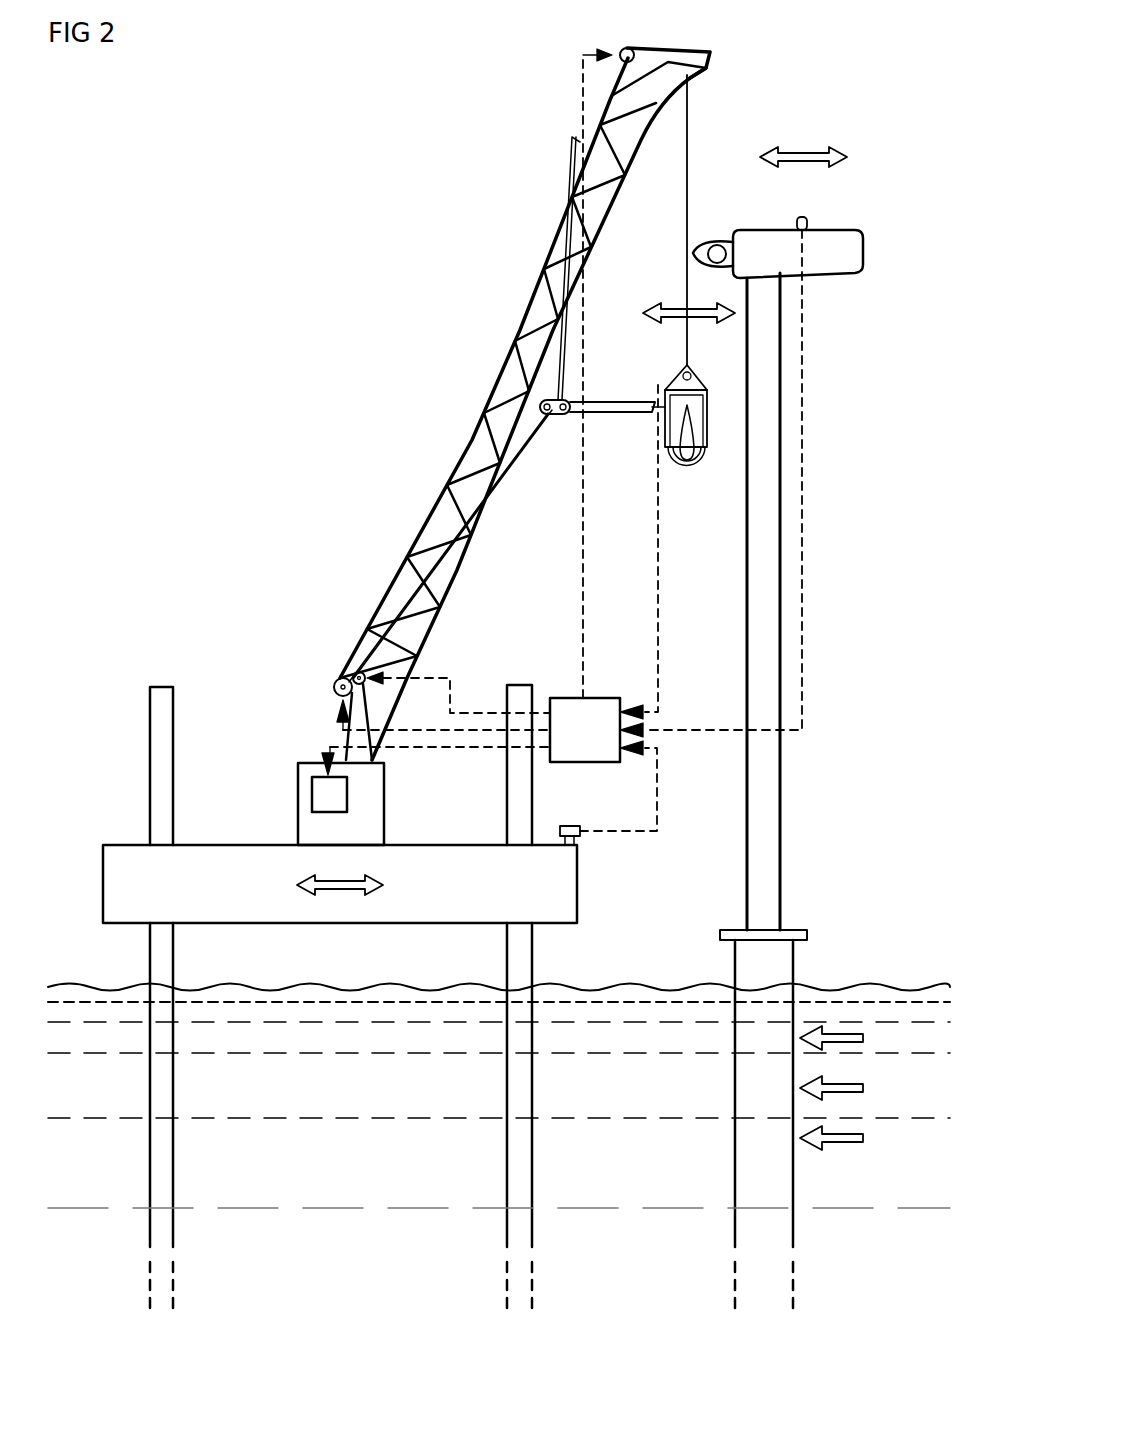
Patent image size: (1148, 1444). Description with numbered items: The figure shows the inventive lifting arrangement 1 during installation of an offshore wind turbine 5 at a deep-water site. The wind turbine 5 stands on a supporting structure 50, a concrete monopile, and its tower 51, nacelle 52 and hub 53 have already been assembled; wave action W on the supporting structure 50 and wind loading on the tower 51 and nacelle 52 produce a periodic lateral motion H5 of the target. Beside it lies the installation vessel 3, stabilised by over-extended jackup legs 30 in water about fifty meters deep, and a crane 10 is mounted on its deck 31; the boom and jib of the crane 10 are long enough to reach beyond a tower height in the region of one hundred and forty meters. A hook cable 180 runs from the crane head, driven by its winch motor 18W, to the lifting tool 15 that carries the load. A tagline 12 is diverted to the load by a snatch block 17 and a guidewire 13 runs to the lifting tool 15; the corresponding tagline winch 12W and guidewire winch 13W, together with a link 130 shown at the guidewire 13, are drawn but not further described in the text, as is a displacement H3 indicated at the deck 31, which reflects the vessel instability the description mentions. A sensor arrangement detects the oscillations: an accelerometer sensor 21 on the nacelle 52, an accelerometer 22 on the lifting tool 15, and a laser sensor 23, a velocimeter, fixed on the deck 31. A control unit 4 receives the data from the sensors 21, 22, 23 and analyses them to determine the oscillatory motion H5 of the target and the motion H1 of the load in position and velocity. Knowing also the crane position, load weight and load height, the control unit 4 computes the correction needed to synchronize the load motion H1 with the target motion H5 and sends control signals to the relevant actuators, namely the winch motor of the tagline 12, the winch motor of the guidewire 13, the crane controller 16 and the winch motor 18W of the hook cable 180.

The lifting arrangement 1 is at (400, 325).
The installation vessel 3 is at (100, 755).
The control unit 4 is at (585, 698).
The offshore wind turbine 5 is at (828, 362).
The crane 10 is at (452, 457).
The tagline 12 is at (573, 287).
The hoist winch 12W is at (352, 672).
The guidewire 13 is at (565, 252).
The tagline winch 13W is at (333, 686).
The lifting tool 15 is at (705, 382).
The crane controller 16 is at (312, 800).
The snatch block 17 is at (565, 418).
The winch motor of the hook cable 18W is at (619, 50).
The accelerometer sensor 21 is at (808, 222).
The accelerometer 22 is at (672, 385).
The laser sensor 23 is at (575, 830).
The jackup legs 30 is at (152, 1085).
The deck 31 is at (118, 885).
The supporting structure 50 is at (775, 1180).
The tower 51 is at (780, 800).
The nacelle 52 is at (855, 240).
The hub 53 is at (718, 245).
The boom link 130 is at (546, 400).
The hook cable 180 is at (690, 110).
The motion of the load H1 is at (675, 303).
The vessel horizontal motion H3 is at (357, 900).
The motion of the target H5 is at (805, 148).
The wave action W is at (866, 1090).